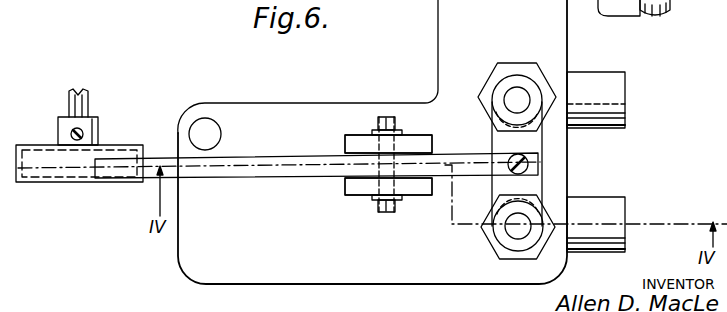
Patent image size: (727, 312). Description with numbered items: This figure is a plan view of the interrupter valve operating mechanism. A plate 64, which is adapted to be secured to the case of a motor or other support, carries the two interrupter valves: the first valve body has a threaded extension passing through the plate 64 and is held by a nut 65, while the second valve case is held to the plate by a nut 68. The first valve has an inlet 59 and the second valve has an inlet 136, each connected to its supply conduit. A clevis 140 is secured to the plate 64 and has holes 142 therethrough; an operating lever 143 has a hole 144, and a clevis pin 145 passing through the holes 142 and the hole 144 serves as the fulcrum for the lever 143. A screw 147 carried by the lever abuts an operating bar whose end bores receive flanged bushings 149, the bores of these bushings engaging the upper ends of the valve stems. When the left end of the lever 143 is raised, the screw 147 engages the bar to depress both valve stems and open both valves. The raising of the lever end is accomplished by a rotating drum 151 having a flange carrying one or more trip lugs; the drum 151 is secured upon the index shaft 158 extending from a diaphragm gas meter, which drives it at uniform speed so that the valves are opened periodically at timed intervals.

The plate 64 is at (335, 265).
The nut 65 is at (553, 220).
The nut 68 is at (495, 78).
The inlet 59 is at (605, 230).
The inlet 136 is at (608, 82).
The clevis 140 is at (345, 132).
The holes 142 is at (398, 190).
The operating lever 143 is at (300, 165).
The hole 144 is at (344, 172).
The clevis pin 145 is at (385, 117).
The screw 147 is at (545, 161).
The flanged bushings 149 is at (512, 90).
The rotating drum 151 is at (60, 165).
The index shaft 158 is at (83, 92).